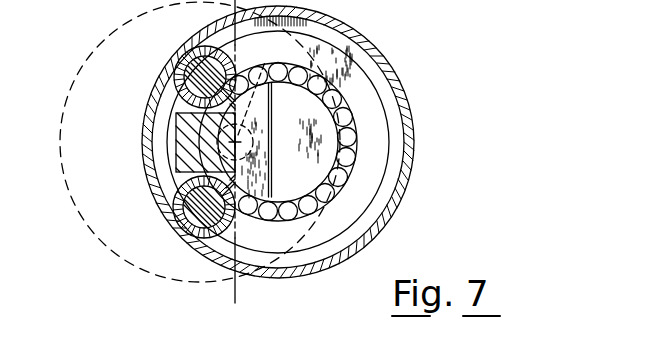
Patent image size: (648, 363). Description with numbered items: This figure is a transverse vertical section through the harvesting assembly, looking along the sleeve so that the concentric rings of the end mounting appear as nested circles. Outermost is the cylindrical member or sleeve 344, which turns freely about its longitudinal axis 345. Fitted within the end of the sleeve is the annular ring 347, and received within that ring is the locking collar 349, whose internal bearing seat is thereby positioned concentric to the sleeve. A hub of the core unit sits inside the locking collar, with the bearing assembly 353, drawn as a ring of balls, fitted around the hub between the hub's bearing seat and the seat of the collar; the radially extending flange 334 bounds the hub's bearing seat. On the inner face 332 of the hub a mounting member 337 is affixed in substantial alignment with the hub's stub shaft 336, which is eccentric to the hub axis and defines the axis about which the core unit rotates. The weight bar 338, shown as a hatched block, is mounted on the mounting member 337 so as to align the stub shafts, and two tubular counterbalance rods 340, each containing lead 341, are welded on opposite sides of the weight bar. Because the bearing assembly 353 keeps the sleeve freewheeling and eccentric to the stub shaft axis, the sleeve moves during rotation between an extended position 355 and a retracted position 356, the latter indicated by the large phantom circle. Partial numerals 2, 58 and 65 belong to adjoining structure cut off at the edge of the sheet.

The partial numeral (cut off) 2 is at (6, 119).
The housing portion 58 is at (364, 8).
The housing portion 65 is at (392, 0).
The inner face 332 is at (322, 157).
The radially extending flange 334 is at (338, 147).
The stub shaft 336 is at (258, 72).
The mounting member 337 is at (258, 181).
The weight bar 338 is at (183, 135).
The tubular counterbalance rods 340 is at (190, 52).
The lead 341 is at (193, 78).
The cylindrical member or sleeve 344 is at (380, 225).
The longitudinal axis 345 is at (279, 136).
The annular ring 347 is at (392, 90).
The locking collar 349 is at (362, 78).
The bearing assembly 353 is at (345, 127).
The extended position 355 is at (393, 205).
The retracted position 356 is at (60, 148).